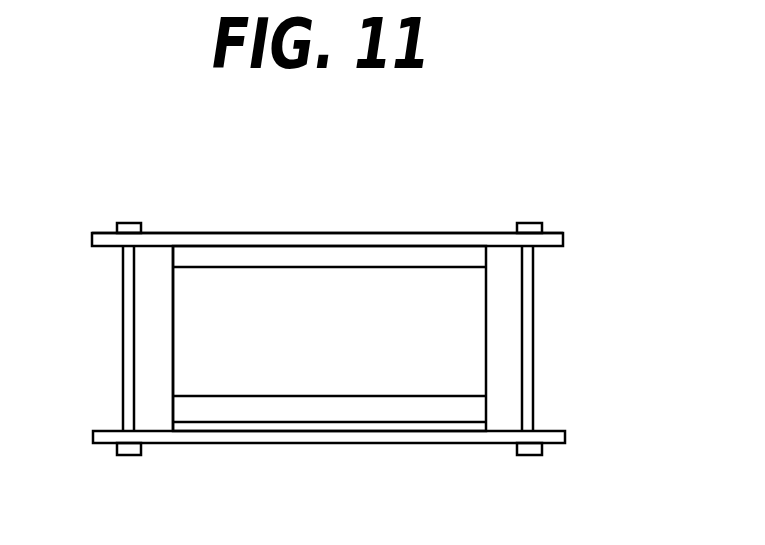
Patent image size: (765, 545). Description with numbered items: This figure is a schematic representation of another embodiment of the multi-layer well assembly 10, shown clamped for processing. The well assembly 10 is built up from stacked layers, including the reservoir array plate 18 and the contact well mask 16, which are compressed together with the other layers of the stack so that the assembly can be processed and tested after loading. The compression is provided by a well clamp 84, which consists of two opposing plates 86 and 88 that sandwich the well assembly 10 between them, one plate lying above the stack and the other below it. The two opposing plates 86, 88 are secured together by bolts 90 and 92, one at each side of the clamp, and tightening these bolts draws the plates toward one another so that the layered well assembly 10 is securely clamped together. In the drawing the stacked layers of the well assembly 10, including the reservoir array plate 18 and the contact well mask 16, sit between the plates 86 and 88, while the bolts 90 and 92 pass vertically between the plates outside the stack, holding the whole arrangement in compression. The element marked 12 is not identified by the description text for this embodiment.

The well assembly 10 is at (580, 270).
The housing 12 is at (486, 255).
The contact well mask 16 is at (487, 408).
The reservoir array plate 18 is at (173, 305).
The well clamp 84 is at (175, 228).
The opposing plate 86 is at (322, 233).
The opposing plate 88 is at (355, 443).
The bolt 90 is at (123, 338).
The bolt 92 is at (533, 337).